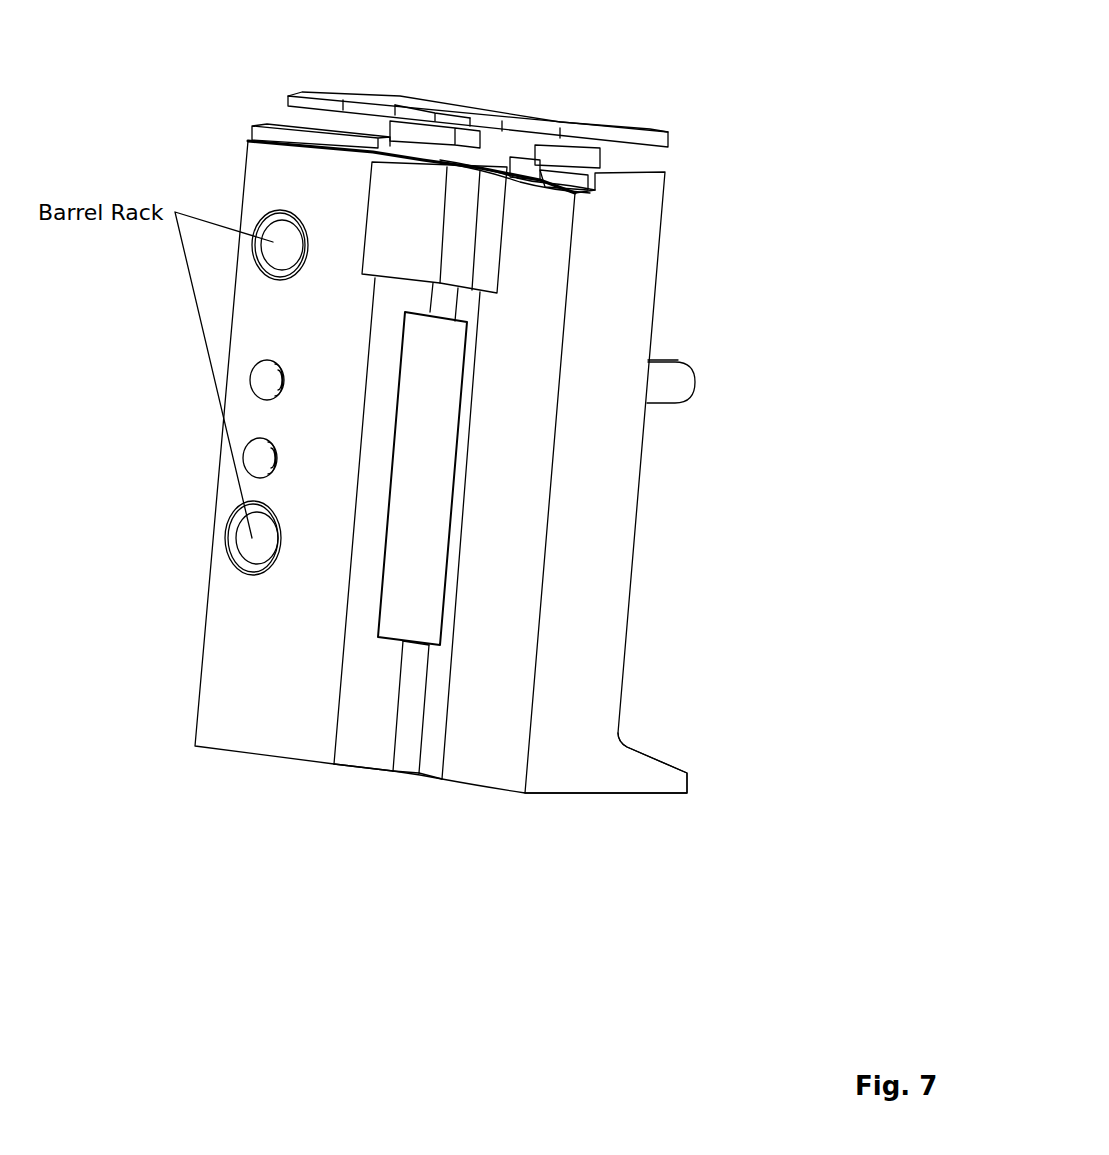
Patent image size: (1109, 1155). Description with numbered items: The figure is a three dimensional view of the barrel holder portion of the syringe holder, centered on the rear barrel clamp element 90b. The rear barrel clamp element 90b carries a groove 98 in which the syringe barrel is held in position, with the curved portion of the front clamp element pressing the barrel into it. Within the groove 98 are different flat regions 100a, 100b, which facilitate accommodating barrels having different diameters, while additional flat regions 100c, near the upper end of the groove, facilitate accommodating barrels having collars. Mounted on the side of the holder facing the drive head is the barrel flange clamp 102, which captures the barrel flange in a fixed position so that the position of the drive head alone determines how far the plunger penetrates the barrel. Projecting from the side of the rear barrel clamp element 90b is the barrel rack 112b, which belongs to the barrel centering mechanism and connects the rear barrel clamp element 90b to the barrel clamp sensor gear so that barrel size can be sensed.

The barrel flange clamp 102 is at (547, 121).
The flat regions 100c is at (398, 228).
The barrel rack 112b is at (673, 385).
The flat region 100b is at (433, 518).
The flat region 100a is at (415, 687).
The groove 98 is at (362, 708).
The rear barrel clamp element 90b is at (593, 757).